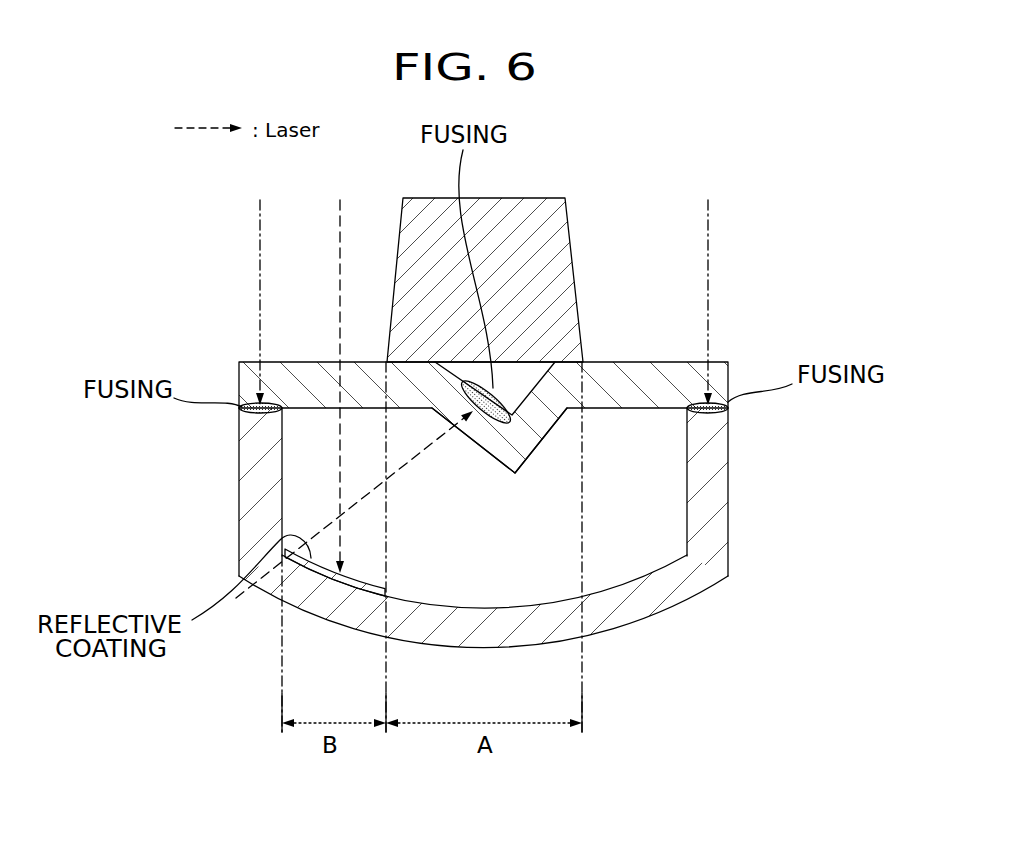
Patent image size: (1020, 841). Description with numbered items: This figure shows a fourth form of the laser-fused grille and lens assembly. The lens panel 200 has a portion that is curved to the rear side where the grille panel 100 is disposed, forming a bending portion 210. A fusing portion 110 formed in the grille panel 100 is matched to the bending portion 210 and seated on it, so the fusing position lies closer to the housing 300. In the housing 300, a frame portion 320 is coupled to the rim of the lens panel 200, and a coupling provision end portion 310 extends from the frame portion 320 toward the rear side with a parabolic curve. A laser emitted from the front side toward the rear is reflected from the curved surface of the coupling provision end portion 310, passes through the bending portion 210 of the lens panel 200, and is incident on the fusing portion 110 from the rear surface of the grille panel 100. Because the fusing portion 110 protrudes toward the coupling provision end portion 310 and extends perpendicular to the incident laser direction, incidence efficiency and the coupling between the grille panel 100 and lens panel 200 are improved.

The grille panel 100 is at (586, 205).
The fusing portion 110 is at (517, 377).
The lens panel 200 is at (640, 347).
The bending portion 210 is at (487, 438).
The housing 300 is at (510, 420).
The coupling provision end portion 310 is at (633, 605).
The frame portion 320 is at (253, 455).